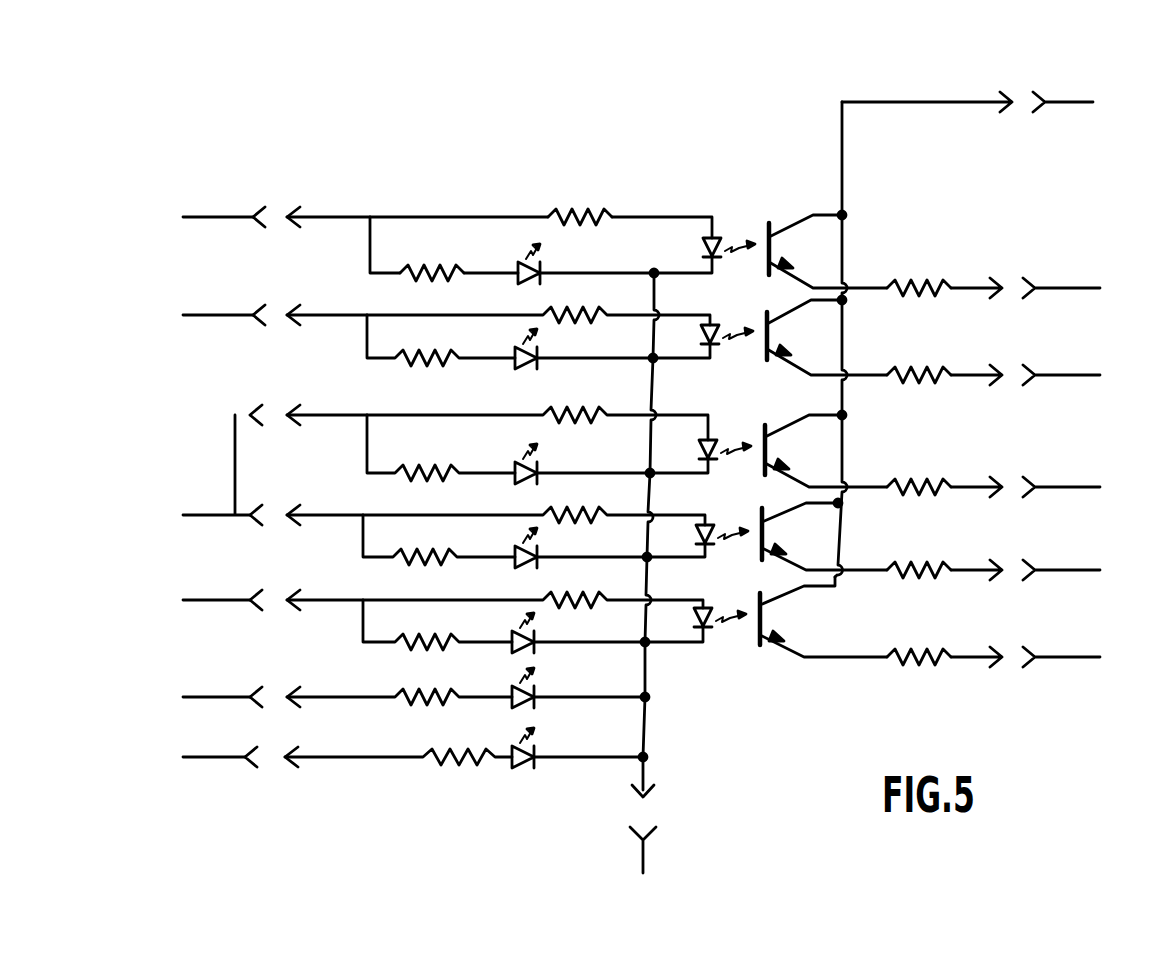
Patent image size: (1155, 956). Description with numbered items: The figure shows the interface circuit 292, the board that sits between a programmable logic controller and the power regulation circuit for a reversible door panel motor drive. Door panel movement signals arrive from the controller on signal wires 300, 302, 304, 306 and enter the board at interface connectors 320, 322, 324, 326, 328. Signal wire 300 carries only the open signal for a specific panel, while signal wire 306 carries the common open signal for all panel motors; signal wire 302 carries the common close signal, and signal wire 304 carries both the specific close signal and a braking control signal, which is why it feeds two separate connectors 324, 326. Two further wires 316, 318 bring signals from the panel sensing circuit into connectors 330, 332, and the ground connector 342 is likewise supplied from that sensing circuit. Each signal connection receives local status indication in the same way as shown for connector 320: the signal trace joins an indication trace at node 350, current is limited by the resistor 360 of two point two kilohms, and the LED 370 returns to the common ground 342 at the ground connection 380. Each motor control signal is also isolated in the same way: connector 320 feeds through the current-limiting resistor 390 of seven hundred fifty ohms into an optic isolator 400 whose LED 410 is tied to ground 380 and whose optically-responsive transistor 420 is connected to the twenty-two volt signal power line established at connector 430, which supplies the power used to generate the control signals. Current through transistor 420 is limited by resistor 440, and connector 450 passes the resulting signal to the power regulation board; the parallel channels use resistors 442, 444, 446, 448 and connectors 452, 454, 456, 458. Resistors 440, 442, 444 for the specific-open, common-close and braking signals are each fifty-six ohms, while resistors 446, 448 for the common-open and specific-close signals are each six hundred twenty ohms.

The interface circuit 292 is at (635, 465).
The signal wire 300 is at (220, 212).
The signal wire 302 is at (218, 312).
The signal wire 304 is at (200, 512).
The signal wire 306 is at (200, 598).
The wire 316 is at (205, 695).
The wire 318 is at (198, 753).
The interface connector 320 is at (278, 208).
The interface connector 322 is at (278, 312).
The interface connector 324 is at (273, 412).
The interface connector 326 is at (272, 512).
The interface connector 328 is at (270, 597).
The connector 330 is at (268, 695).
The connector 332 is at (262, 753).
The ground connector 342 is at (648, 826).
The node 350 is at (370, 212).
The resistor 360 is at (435, 270).
The LED 370 is at (541, 270).
The common ground connection 380 is at (654, 272).
The resistor 390 is at (575, 212).
The optic isolator 400 is at (780, 214).
The LED 410 is at (722, 258).
The optically-responsive transistor 420 is at (766, 240).
The connector 430 is at (1022, 100).
The resistor 440 is at (932, 283).
The resistor 442 is at (932, 372).
The resistor 444 is at (932, 484).
The resistor 446 is at (932, 567).
The resistor 448 is at (938, 655).
The connector 450 is at (1028, 285).
The connector 452 is at (1028, 372).
The connector 454 is at (1028, 484).
The connector 456 is at (1028, 567).
The connector 458 is at (1028, 655).